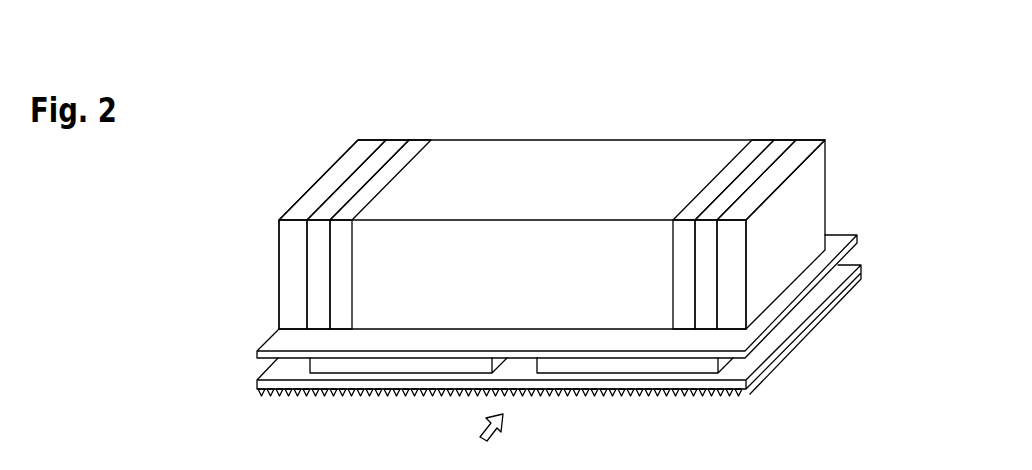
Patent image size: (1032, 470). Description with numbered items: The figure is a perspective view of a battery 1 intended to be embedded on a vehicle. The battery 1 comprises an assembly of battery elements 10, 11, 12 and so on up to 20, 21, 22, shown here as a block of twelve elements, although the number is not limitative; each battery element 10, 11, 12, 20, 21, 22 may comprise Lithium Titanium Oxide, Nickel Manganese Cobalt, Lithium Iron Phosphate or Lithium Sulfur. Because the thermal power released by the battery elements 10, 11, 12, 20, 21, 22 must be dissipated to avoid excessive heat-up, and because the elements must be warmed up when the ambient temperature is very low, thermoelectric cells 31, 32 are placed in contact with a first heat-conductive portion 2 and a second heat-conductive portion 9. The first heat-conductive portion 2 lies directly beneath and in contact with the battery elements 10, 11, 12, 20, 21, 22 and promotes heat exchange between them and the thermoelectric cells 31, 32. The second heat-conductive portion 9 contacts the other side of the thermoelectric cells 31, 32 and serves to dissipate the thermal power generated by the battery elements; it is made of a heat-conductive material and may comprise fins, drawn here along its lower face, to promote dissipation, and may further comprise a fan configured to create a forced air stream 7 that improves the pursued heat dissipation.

The battery 1 is at (590, 100).
The first heat-conductive portion 2 is at (676, 344).
The forced air stream 7 is at (486, 440).
The second heat-conductive portion 9 is at (645, 397).
The battery element 10 is at (363, 150).
The battery element 11 is at (393, 150).
The battery element 12 is at (418, 140).
The battery element 20 is at (753, 150).
The battery element 21 is at (780, 150).
The battery element 22 is at (805, 147).
The thermoelectric cell 31 is at (415, 362).
The thermoelectric cell 32 is at (595, 365).